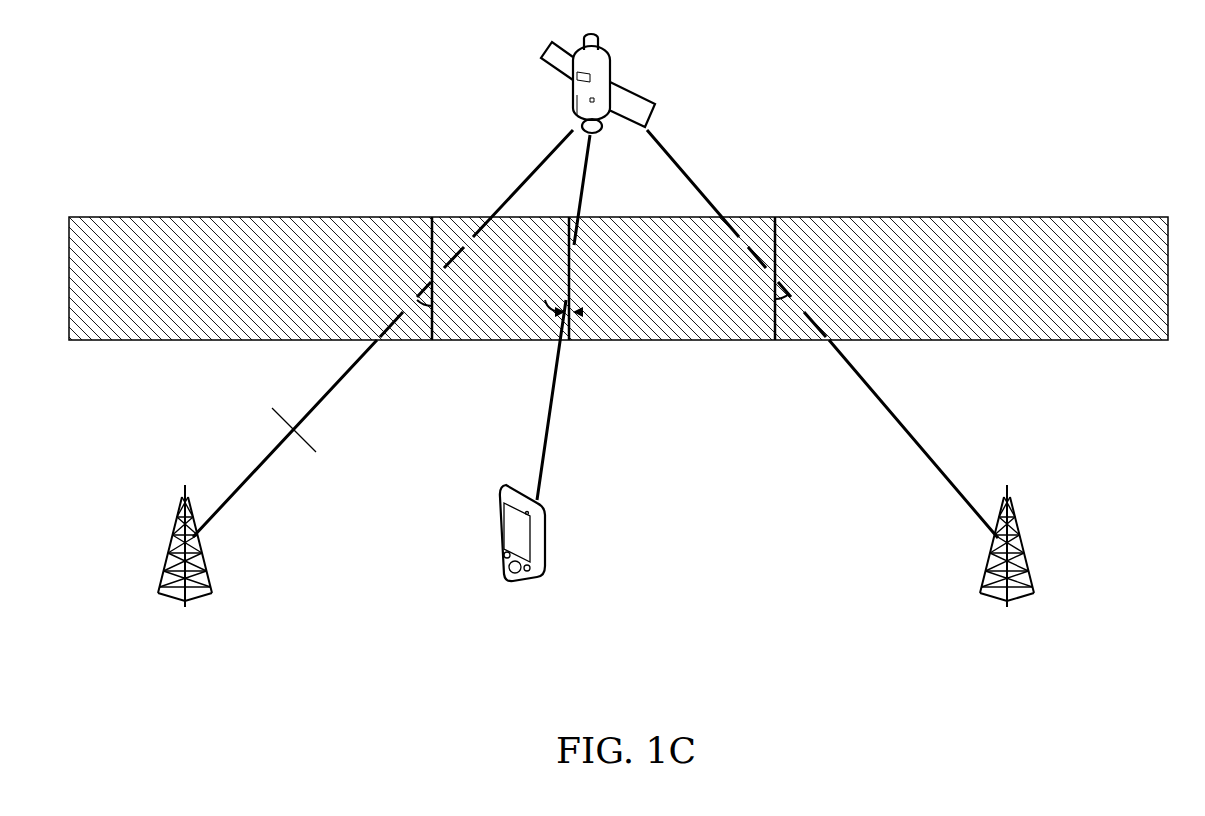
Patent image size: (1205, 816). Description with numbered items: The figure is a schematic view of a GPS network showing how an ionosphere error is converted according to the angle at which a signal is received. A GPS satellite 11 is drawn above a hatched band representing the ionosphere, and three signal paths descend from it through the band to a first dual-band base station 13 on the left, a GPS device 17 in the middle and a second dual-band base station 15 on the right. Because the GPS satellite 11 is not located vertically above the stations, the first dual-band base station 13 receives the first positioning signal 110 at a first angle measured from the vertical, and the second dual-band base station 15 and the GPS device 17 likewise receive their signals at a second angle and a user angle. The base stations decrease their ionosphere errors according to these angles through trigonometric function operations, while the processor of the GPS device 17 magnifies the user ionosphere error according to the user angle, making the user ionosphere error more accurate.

The GPS satellite 11 is at (655, 107).
The first dual-band base station 13 is at (172, 543).
The second dual-band base station 15 is at (1017, 545).
The GPS device 17 is at (545, 553).
The first positioning signal 110 is at (290, 433).